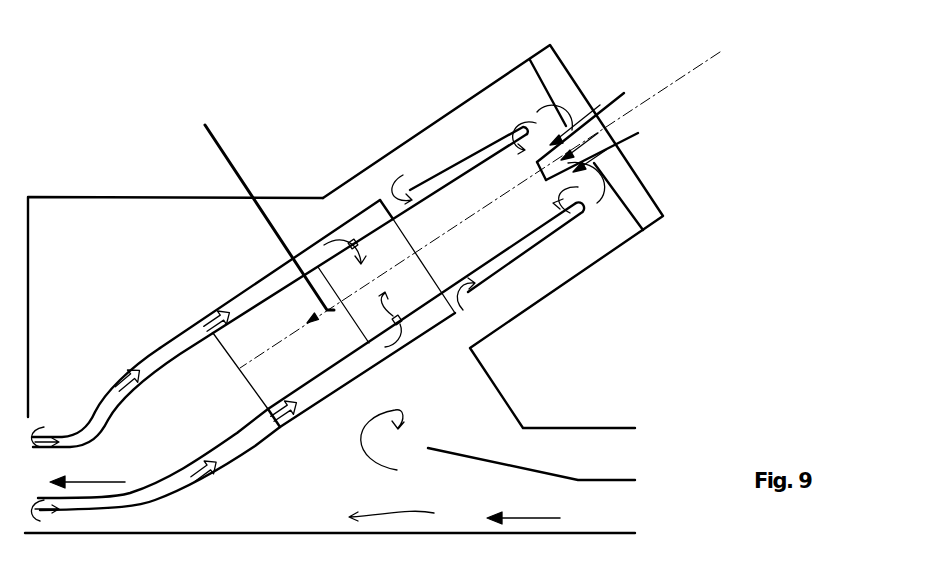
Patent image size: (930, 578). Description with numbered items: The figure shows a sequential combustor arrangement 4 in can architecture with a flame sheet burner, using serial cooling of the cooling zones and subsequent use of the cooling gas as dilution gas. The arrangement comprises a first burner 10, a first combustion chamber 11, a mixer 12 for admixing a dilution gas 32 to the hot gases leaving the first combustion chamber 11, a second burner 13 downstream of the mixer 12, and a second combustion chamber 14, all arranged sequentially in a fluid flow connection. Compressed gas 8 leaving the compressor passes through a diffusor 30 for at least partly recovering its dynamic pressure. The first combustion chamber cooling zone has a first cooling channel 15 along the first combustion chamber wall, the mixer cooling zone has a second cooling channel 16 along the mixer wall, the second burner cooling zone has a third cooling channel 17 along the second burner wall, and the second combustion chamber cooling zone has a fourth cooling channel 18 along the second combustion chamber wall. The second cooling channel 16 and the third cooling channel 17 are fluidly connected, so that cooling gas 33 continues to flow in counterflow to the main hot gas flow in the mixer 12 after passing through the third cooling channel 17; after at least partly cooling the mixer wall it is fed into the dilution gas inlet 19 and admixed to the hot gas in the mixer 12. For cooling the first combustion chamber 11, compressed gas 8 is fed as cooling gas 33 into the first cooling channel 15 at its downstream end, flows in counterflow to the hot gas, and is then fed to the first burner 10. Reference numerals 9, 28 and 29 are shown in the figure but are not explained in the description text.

The sequential combustor arrangement 4 is at (748, 62).
The compressed gas 8 is at (454, 508).
The outgoing air flow 9 is at (87, 472).
The first burner 10 is at (344, 284).
The first combustion chamber 11 is at (451, 238).
The mixer 12 is at (357, 262).
The second burner 13 is at (266, 369).
The second combustion chamber 14 is at (247, 411).
The first cooling channel 15 is at (443, 170).
The second cooling channel 16 is at (358, 222).
The third cooling channel 17 is at (272, 287).
The fourth cooling channel 18 is at (143, 365).
The dilution gas inlet 19 is at (350, 241).
The air inlet 28 is at (575, 147).
The flap 29 is at (250, 206).
The diffusor 30 is at (480, 489).
The dilution gas 32 is at (399, 316).
The cooling gas 33 is at (470, 294).